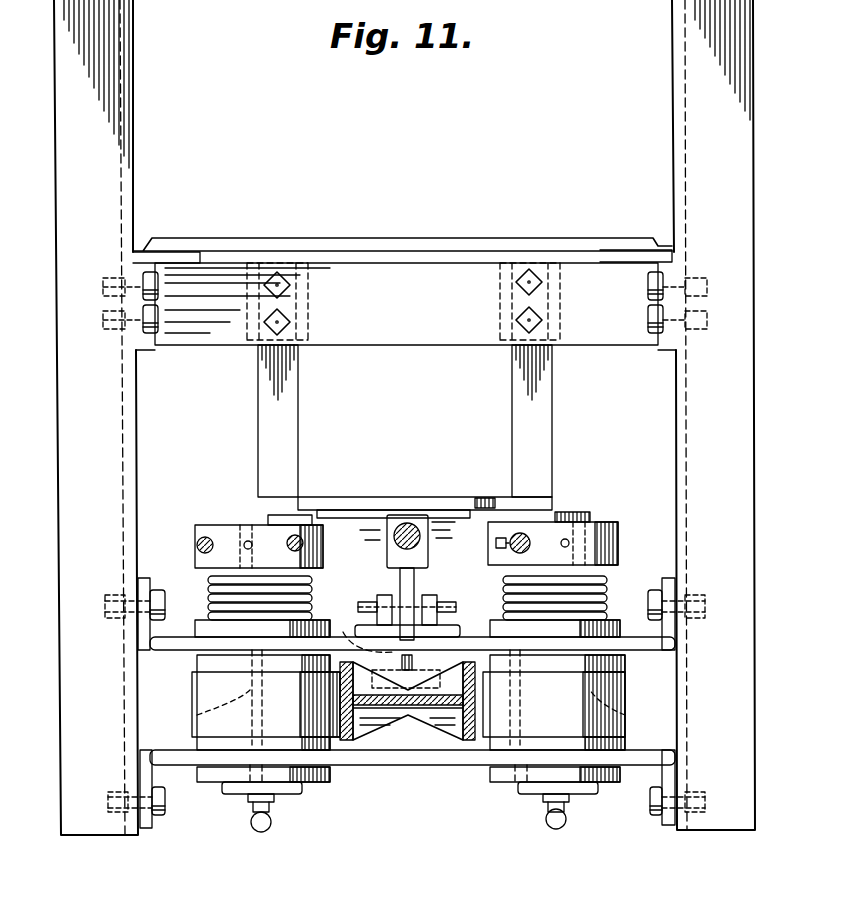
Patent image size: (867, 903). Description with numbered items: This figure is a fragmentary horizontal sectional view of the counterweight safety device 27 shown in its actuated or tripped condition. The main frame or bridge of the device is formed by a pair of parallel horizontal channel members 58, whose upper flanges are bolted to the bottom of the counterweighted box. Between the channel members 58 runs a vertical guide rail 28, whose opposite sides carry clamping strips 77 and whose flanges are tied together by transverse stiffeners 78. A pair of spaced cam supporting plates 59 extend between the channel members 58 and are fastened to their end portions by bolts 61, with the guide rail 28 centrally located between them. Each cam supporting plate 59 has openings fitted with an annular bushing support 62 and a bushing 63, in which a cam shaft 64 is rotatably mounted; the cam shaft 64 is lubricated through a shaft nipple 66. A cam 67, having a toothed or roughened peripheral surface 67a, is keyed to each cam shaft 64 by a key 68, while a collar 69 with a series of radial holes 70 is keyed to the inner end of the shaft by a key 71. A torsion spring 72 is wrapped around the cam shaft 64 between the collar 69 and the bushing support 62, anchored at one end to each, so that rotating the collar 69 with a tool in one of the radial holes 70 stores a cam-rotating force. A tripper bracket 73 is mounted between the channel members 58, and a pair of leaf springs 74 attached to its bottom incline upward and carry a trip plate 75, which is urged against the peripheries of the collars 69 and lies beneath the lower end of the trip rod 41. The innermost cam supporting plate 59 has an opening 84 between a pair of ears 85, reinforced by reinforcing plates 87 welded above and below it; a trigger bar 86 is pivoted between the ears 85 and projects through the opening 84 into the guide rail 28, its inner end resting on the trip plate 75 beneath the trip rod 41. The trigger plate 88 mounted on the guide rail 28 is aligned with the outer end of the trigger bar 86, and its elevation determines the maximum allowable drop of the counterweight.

The channel members 58 is at (133, 135).
The safety device 27 is at (517, 230).
The tripper bracket 73 is at (393, 270).
The leaf springs 74 is at (265, 410).
The trip plate 75 is at (432, 505).
The trip rods 41 is at (407, 520).
The trigger bar 86 is at (400, 575).
The ears 85 is at (378, 598).
The reinforcing plates 87 is at (462, 627).
The opening 84 is at (360, 633).
The collar 69 is at (200, 525).
The radial holes 70 is at (249, 541).
The key 71 is at (240, 525).
The torsion spring 72 is at (215, 590).
The bushing support 62 is at (200, 636).
The cam supporting plates 59 is at (632, 640).
The bolts 61 is at (108, 606).
The bushing 63 is at (212, 651).
The cam 67 is at (192, 700).
The toothed peripheral surface 67a is at (320, 700).
The key 68 is at (197, 718).
The trigger plate 88 is at (408, 703).
The transverse stiffeners 78 is at (445, 700).
The guide rails 28 is at (452, 730).
The clamping strips 77 is at (346, 742).
The cam shaft 64 is at (250, 800).
The shaft nipples 66 is at (263, 833).